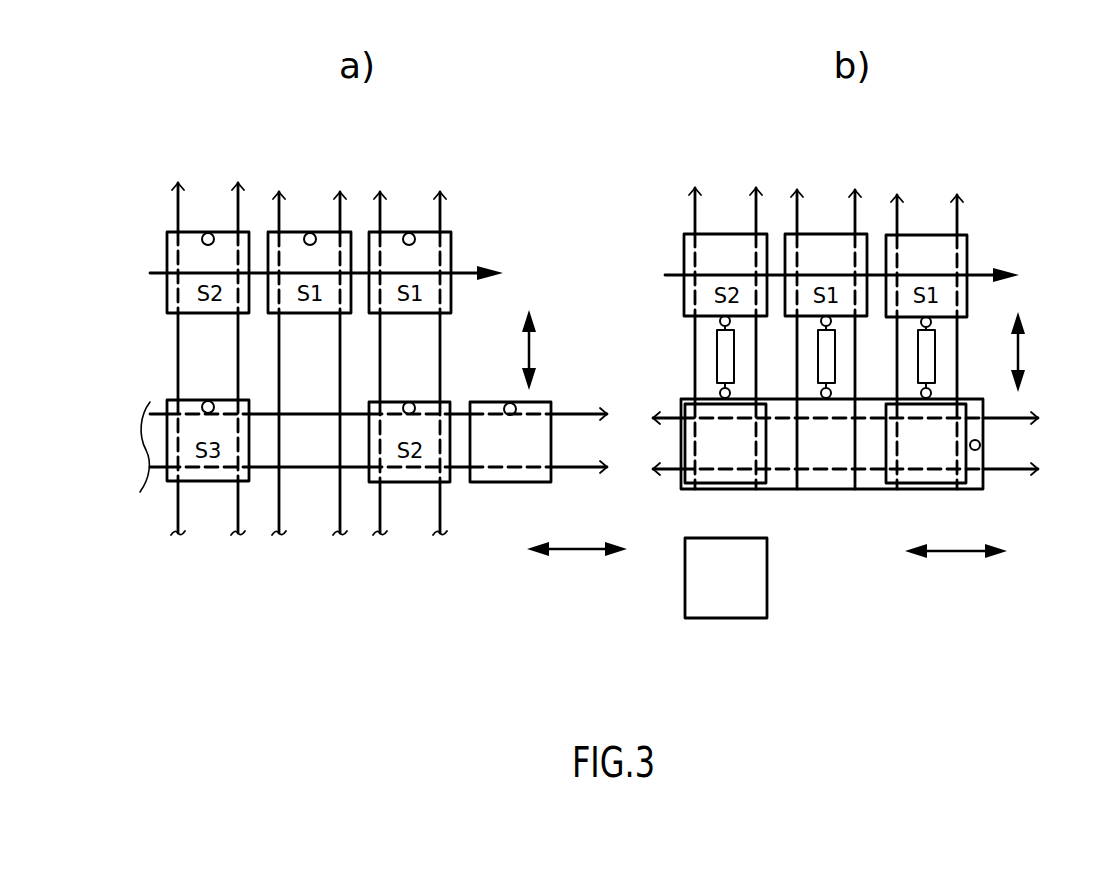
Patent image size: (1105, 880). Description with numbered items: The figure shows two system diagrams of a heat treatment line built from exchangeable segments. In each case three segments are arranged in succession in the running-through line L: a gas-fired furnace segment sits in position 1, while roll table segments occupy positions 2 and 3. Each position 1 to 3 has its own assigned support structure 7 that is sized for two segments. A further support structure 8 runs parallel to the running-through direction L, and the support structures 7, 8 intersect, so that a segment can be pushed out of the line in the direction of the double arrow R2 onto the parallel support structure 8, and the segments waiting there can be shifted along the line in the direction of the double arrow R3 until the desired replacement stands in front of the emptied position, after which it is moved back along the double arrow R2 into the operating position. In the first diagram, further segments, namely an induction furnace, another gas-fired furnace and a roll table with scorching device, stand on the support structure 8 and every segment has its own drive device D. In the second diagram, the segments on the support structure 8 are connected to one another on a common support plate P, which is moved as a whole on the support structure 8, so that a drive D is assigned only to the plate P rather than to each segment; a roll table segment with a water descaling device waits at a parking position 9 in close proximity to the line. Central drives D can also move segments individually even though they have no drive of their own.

In FIG. 3a, the support structure 7 is at (238, 493).
In FIG. 3b, the support structure 7 is at (697, 214).
In FIG. 3a, the support structure 8 is at (567, 420).
In FIG. 3b, the support structure 8 is at (997, 422).
In FIG. 3a, the parking position 9 is at (507, 475).
In FIG. 3b, the parking position 9 is at (760, 568).
In FIG. 3a, the drive device D is at (210, 231).
In FIG. 3b, the drive device D is at (727, 353).
In FIG. 3b, the support plate P is at (822, 467).
In FIG. 3a, the running-through line L is at (337, 274).
In FIG. 3b, the running-through line L is at (853, 276).
In FIG. 3a, the double arrow R2 is at (543, 350).
In FIG. 3b, the double arrow R2 is at (1032, 352).
In FIG. 3a, the double arrow R3 is at (577, 537).
In FIG. 3b, the double arrow R3 is at (956, 539).
In FIG. 3a, the position 1 is at (207, 650).
In FIG. 3b, the position 1 is at (723, 650).
In FIG. 3a, the position 2 is at (309, 650).
In FIG. 3b, the position 2 is at (829, 650).
In FIG. 3a, the position 3 is at (411, 650).
In FIG. 3b, the position 3 is at (933, 650).